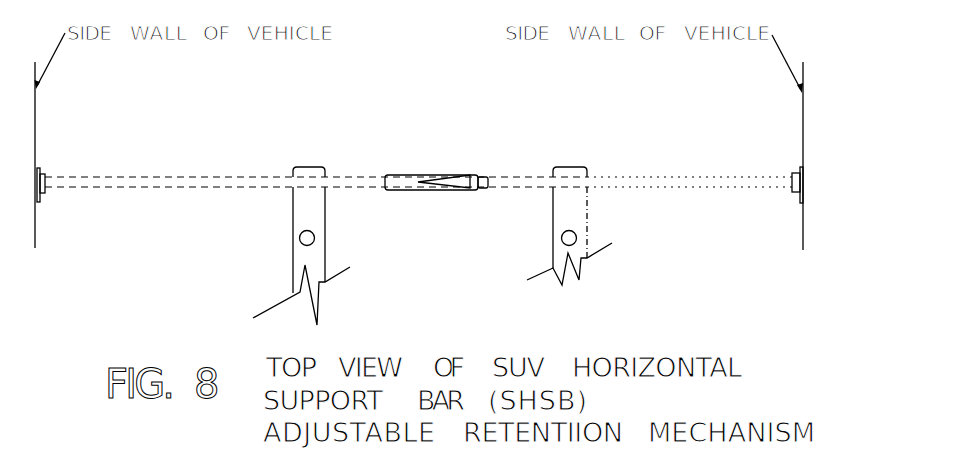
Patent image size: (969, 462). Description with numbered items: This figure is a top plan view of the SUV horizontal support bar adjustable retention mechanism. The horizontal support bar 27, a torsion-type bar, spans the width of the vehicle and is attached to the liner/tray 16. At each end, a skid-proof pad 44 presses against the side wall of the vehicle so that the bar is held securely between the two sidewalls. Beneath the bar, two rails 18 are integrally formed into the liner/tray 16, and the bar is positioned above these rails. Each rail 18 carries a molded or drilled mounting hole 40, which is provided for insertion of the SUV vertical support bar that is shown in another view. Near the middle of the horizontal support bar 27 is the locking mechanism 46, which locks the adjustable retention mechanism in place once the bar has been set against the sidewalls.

The liner/tray 16 is at (203, 240).
The rail 18 is at (566, 198).
The SUV horizontal support bar (SHSB) 27 is at (172, 183).
The mounting hole 40 is at (563, 241).
The skid-proof pad 44 is at (45, 170).
The locking mechanism 46 is at (403, 182).